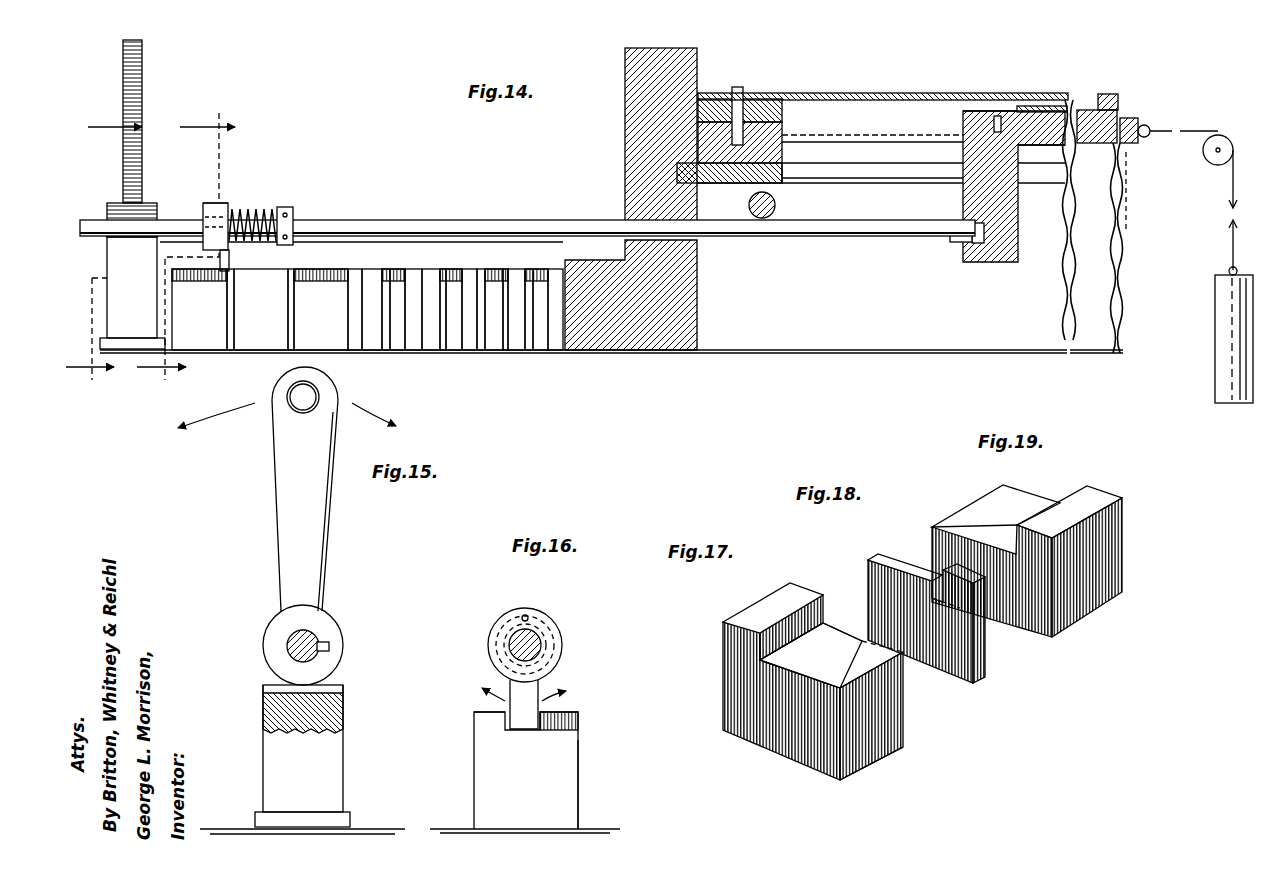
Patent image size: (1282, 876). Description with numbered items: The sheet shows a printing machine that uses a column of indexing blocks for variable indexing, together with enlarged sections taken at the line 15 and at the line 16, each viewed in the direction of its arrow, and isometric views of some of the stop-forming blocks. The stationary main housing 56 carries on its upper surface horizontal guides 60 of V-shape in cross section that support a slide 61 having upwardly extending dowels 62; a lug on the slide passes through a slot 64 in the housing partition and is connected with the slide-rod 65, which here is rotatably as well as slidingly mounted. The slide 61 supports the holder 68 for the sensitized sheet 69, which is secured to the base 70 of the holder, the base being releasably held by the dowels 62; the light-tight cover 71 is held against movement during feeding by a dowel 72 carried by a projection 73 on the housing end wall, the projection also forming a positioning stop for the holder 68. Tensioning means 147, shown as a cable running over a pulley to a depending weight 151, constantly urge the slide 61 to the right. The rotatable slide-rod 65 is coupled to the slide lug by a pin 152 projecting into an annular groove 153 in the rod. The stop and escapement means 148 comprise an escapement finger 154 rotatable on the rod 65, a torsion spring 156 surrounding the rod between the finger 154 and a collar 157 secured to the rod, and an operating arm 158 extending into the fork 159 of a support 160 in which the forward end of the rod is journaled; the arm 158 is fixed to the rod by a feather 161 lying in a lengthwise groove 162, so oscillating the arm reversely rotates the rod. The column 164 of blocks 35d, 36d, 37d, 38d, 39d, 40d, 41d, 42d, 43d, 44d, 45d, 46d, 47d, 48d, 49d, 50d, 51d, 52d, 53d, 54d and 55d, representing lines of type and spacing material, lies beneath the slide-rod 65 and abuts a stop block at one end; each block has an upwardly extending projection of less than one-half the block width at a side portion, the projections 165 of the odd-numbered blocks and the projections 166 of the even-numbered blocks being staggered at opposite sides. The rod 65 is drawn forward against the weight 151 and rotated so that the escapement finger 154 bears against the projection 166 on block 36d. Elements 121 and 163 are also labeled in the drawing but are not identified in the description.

In FIG. 14, the section line 15 is at (104, 247).
In FIG. 14, the section line 16 is at (186, 247).
In FIG. 14, the block 35d is at (199, 309).
In FIG. 16, the block 35d is at (603, 784).
In FIG. 17, the block 35d is at (860, 752).
In FIG. 14, the block 36d is at (231, 336).
In FIG. 18, the block 36d is at (965, 668).
In FIG. 14, the block 37d is at (261, 309).
In FIG. 19, the block 37d is at (1068, 608).
In FIG. 14, the block 38d is at (291, 336).
In FIG. 14, the block 39d is at (321, 309).
In FIG. 14, the block 40d is at (353, 336).
In FIG. 14, the block 41d is at (374, 336).
In FIG. 14, the block 42d is at (386, 330).
In FIG. 14, the block 43d is at (396, 300).
In FIG. 14, the block 44d is at (413, 285).
In FIG. 14, the block 45d is at (431, 332).
In FIG. 14, the block 46d is at (442, 300).
In FIG. 14, the block 47d is at (453, 332).
In FIG. 14, the block 48d is at (469, 300).
In FIG. 14, the block 49d is at (481, 332).
In FIG. 14, the block 50d is at (494, 332).
In FIG. 14, the block 51d is at (506, 300).
In FIG. 14, the block 52d is at (521, 332).
In FIG. 14, the block 53d is at (529, 332).
In FIG. 14, the block 54d is at (540, 300).
In FIG. 14, the block 55d is at (557, 332).
In FIG. 14, the main housing 56 is at (625, 187).
In FIG. 14, the horizontal guides 60 is at (820, 142).
In FIG. 14, the slide 61 is at (1047, 147).
In FIG. 14, the dowels 62 is at (963, 126).
In FIG. 14, the slot 64 is at (823, 184).
In FIG. 14, the slide-rod 65 is at (95, 218).
In FIG. 15, the slide-rod 65 is at (296, 638).
In FIG. 16, the slide-rod 65 is at (520, 645).
In FIG. 14, the holder 68 is at (1122, 100).
In FIG. 14, the sheet 69 is at (1040, 106).
In FIG. 14, the base 70 is at (970, 111).
In FIG. 14, the cover 71 is at (800, 93).
In FIG. 14, the dowel 72 is at (732, 130).
In FIG. 14, the projection 73 is at (739, 192).
In FIG. 14, the pin 121 is at (757, 218).
In FIG. 14, the tensioning means 147 is at (1225, 190).
In FIG. 14, the stop and escapement means 148 is at (218, 201).
In FIG. 14, the weight 151 is at (1230, 331).
In FIG. 14, the pin 152 is at (977, 245).
In FIG. 14, the annular groove 153 is at (962, 240).
In FIG. 14, the escapement finger 154 is at (231, 259).
In FIG. 16, the escapement finger 154 is at (512, 721).
In FIG. 14, the torsion spring 156 is at (252, 207).
In FIG. 16, the torsion spring 156 is at (550, 652).
In FIG. 14, the collar 157 is at (288, 207).
In FIG. 14, the operating arm 158 is at (143, 58).
In FIG. 15, the operating arm 158 is at (289, 527).
In FIG. 14, the fork 159 is at (116, 248).
In FIG. 15, the fork 159 is at (270, 686).
In FIG. 14, the support 160 is at (132, 287).
In FIG. 15, the support 160 is at (302, 756).
In FIG. 15, the feather 161 is at (328, 645).
In FIG. 14, the groove 162 is at (158, 196).
In FIG. 15, the groove 162 is at (287, 413).
In FIG. 15, the hub 163 is at (266, 644).
In FIG. 14, the column of blocks 164 is at (165, 320).
In FIG. 16, the column of blocks 164 is at (536, 753).
In FIG. 17, the column of blocks 164 is at (783, 720).
In FIG. 14, the projections 165 is at (210, 201).
In FIG. 16, the projections 165 is at (490, 713).
In FIG. 17, the projections 165 is at (750, 622).
In FIG. 19, the projections 165 is at (1070, 511).
In FIG. 16, the projections 166 is at (578, 719).
In FIG. 18, the projections 166 is at (965, 598).